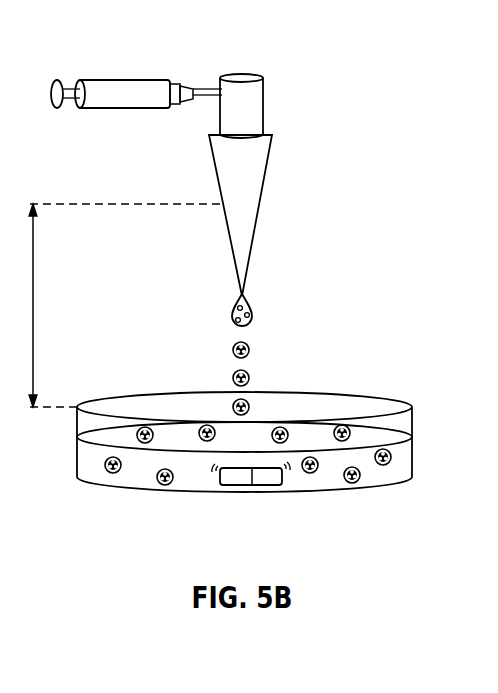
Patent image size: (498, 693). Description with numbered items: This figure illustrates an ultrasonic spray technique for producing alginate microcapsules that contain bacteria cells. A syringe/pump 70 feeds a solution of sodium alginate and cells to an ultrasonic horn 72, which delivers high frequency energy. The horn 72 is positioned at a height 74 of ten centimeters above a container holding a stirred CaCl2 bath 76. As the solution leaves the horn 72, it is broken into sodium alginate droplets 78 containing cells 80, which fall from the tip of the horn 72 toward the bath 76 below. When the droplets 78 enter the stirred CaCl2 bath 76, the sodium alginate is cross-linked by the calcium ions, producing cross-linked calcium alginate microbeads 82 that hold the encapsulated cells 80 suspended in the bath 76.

The syringe/pump 70 is at (100, 79).
The ultrasonic horn 72 is at (257, 178).
The height 74 is at (35, 256).
The stirred CaCl2 bath 76 is at (133, 477).
The sodium alginate droplets 78 is at (233, 350).
The cells 80 is at (235, 310).
The cross-linked calcium alginate microbeads 82 is at (340, 428).